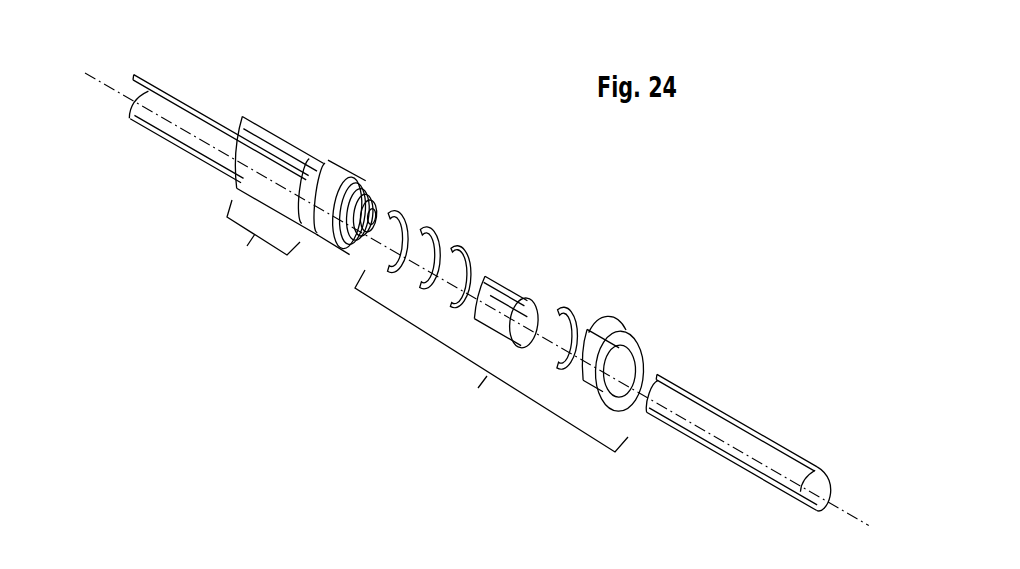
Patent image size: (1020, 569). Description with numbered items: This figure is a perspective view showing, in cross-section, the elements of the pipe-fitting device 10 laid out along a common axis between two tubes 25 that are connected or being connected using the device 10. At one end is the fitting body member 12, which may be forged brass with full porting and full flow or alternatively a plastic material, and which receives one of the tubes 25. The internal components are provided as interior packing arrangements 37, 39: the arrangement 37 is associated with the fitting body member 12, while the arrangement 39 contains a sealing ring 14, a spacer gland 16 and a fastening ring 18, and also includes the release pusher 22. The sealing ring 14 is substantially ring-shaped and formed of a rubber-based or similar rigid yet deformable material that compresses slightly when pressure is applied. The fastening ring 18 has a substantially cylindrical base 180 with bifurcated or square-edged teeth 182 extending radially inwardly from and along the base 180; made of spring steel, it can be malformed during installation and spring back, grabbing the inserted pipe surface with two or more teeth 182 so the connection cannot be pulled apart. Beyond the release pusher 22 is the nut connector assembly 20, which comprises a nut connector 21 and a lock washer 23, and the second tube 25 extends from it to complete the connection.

The device 10 is at (752, 213).
The fitting body member 12 is at (310, 168).
The sealing ring 14 is at (400, 213).
The spacer gland 16 is at (425, 232).
The fastening ring 18 is at (468, 248).
The base 180 is at (460, 248).
The teeth 182 is at (468, 268).
The nut connector assembly 20 is at (723, 320).
The nut connector 21 is at (618, 335).
The release pusher 22 is at (522, 292).
The lock washer 23 is at (573, 310).
The tube 25 is at (187, 100).
The interior packing arrangement 37 is at (260, 238).
The interior packing arrangement 39 is at (491, 361).